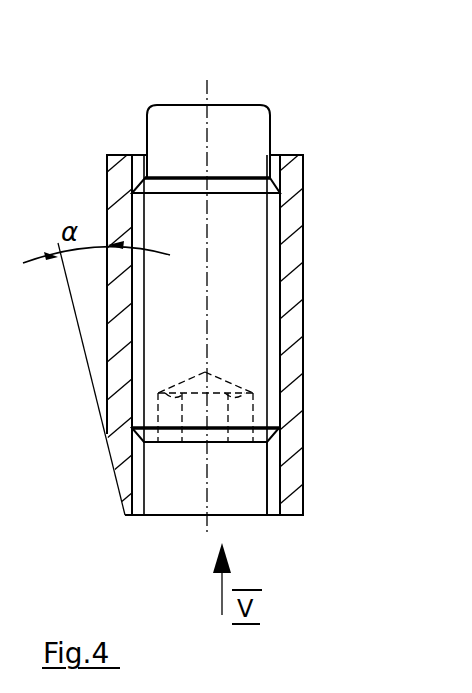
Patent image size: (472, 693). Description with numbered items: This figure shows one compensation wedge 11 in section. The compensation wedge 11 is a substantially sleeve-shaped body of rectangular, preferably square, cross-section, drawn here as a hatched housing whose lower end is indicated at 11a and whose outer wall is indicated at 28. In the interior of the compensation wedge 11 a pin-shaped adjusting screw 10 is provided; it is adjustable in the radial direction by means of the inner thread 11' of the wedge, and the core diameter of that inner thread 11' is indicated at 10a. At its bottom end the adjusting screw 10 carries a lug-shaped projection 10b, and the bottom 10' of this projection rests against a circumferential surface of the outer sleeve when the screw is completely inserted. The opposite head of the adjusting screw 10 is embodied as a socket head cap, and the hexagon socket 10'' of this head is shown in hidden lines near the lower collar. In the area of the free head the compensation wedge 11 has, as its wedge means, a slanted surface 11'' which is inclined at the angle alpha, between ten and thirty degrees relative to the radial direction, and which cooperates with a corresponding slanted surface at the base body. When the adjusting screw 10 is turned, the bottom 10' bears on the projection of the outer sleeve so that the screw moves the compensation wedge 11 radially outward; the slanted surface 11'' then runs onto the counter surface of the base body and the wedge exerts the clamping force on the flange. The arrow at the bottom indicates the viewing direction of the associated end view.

The adjusting screw 10 is at (269, 166).
The bottom of the lug-shaped projection 10' is at (236, 63).
The hexagon socket of bolt 10'' is at (143, 410).
The core diameter of the inner thread 10a is at (280, 430).
The lug-shaped projection 10b is at (233, 128).
The compensation wedge 11 is at (255, 345).
The inner thread 11' is at (279, 335).
The slanted surface 11'' is at (77, 383).
The lower end of sleeve 11a is at (270, 463).
The outer surface of sleeve 28 is at (303, 309).